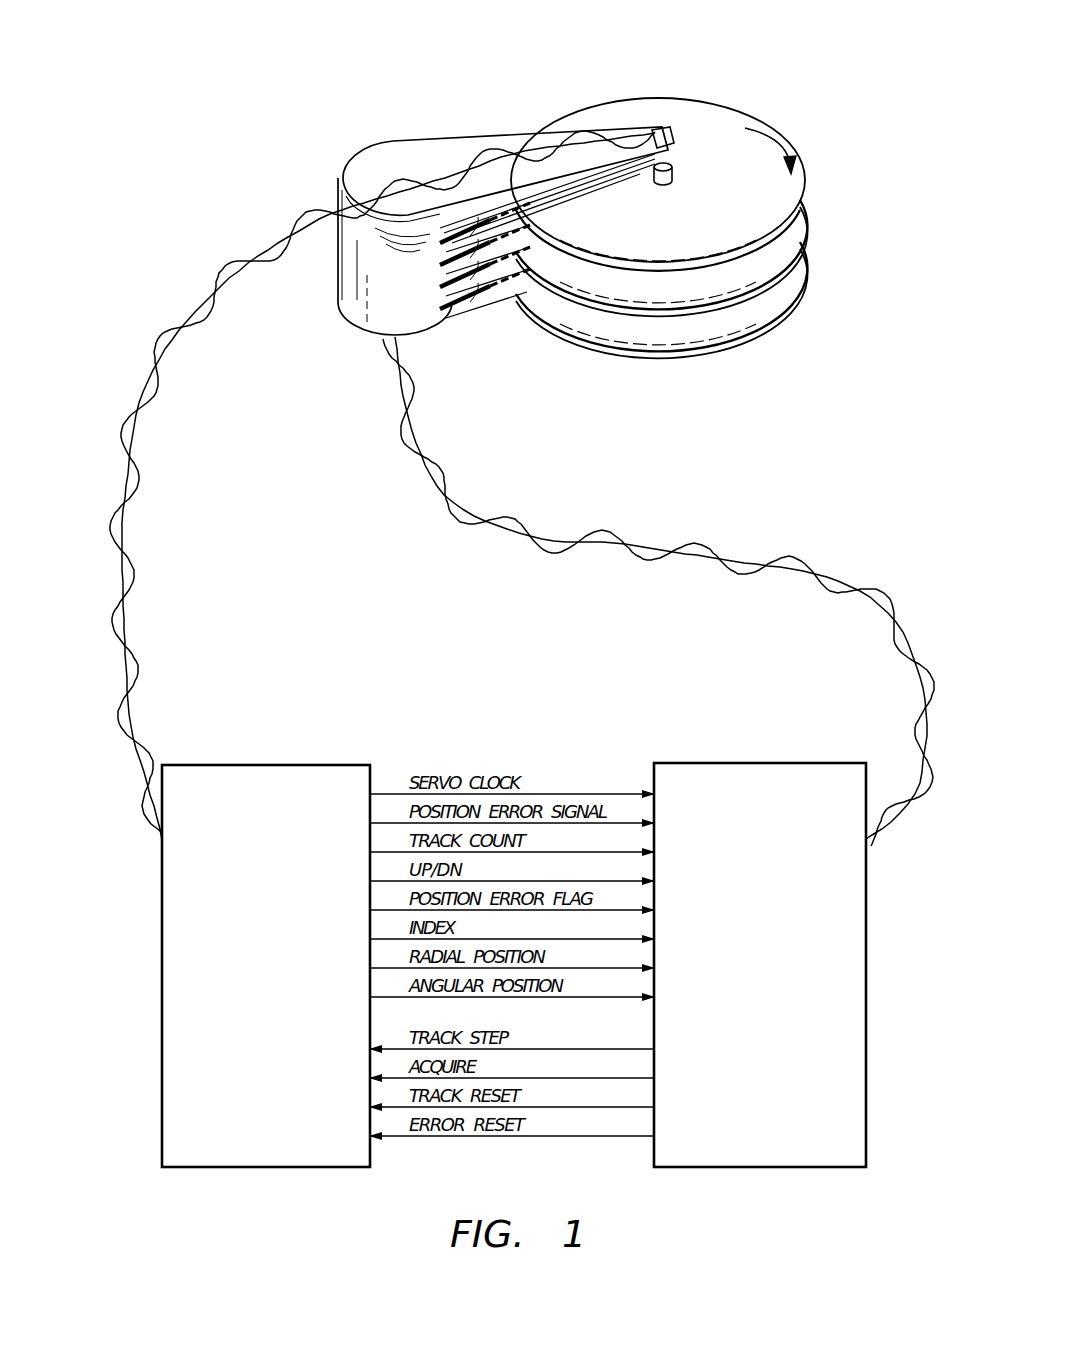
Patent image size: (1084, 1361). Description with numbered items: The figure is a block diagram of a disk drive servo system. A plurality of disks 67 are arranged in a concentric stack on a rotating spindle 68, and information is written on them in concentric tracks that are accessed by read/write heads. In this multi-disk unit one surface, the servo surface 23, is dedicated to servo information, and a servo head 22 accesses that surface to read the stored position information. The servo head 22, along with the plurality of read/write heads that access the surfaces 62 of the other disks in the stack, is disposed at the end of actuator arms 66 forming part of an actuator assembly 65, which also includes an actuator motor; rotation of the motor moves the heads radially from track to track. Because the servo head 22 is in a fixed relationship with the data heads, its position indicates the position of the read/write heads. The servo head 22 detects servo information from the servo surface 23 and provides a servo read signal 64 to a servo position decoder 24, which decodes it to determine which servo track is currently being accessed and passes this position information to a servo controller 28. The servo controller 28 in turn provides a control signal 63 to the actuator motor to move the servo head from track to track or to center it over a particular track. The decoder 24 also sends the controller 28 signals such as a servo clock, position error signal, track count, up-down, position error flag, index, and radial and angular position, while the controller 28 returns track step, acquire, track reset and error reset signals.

The servo head 22 is at (676, 150).
The servo surface 23 is at (780, 142).
The servo position decoder 24 is at (250, 765).
The servo controller 28 is at (720, 763).
The surfaces of the other disks 62 is at (724, 249).
The control signal 63 is at (520, 520).
The servo read signal 64 is at (148, 431).
The actuator assembly 65 is at (412, 140).
The actuator arms 66 is at (523, 152).
The disks 67 is at (688, 313).
The spindle 68 is at (673, 182).